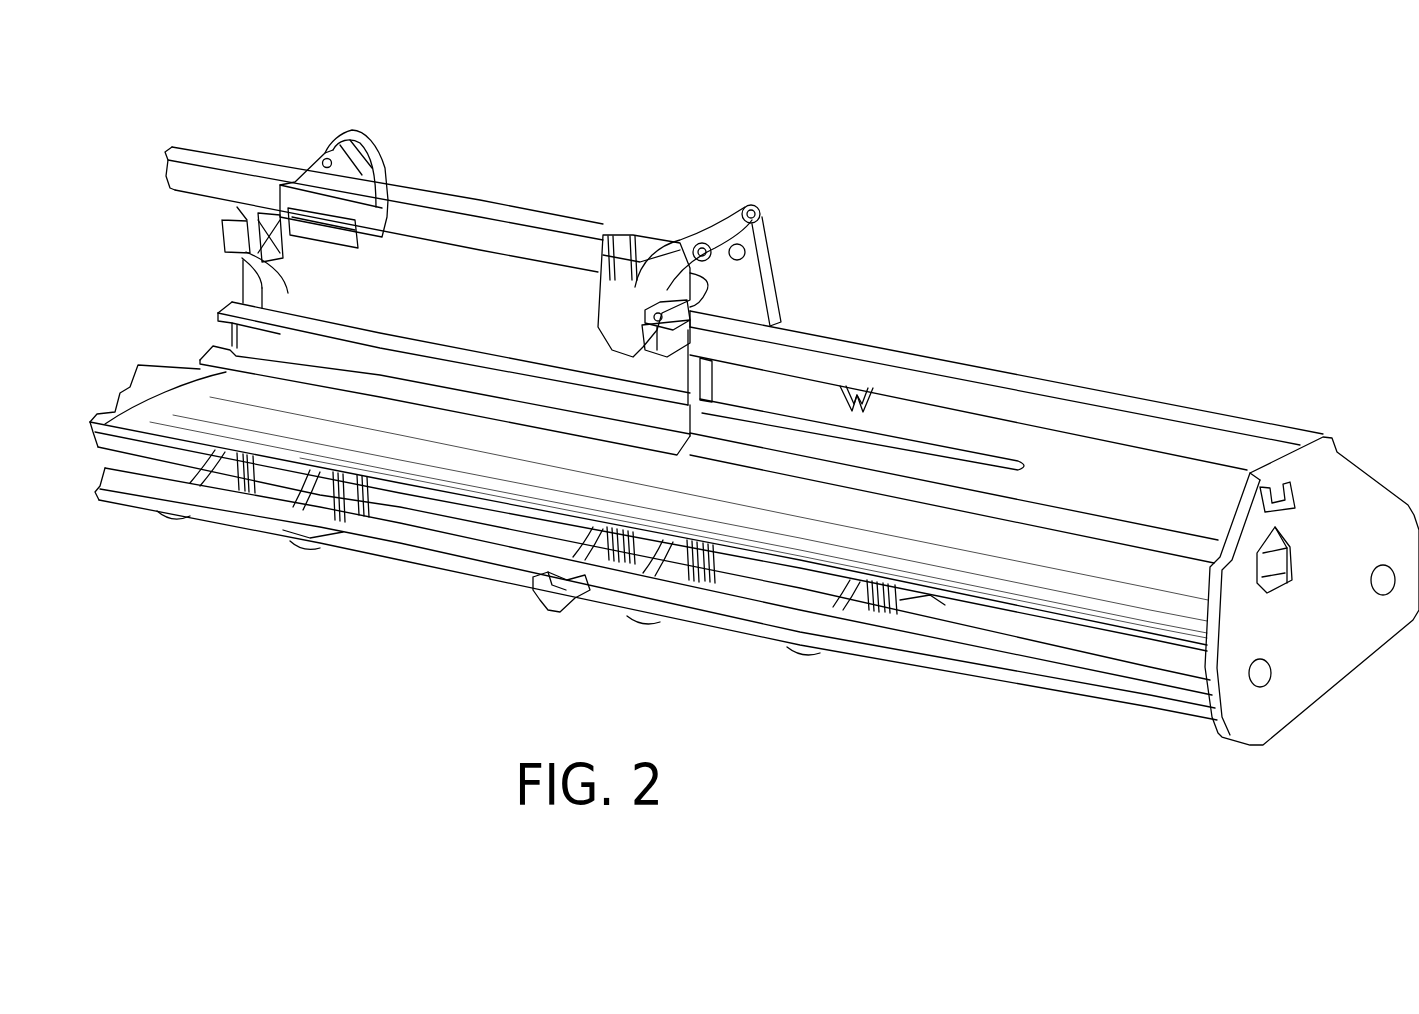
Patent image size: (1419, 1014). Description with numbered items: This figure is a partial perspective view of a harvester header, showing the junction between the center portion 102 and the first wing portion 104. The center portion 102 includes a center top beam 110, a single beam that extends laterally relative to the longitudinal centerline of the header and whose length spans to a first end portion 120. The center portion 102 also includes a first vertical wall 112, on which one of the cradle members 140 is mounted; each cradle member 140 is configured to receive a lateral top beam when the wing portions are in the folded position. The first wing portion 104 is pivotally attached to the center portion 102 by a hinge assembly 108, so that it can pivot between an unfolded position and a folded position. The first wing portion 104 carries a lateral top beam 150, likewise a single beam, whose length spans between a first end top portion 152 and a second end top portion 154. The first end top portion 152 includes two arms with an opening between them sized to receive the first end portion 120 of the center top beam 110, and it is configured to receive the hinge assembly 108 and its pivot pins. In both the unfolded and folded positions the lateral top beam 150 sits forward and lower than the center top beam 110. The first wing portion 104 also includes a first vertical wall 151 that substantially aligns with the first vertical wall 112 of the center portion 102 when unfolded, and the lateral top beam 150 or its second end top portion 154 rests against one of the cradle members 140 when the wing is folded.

The center portion 102 is at (425, 187).
The first wing portion 104 is at (1135, 390).
The hinge assembly 108 is at (772, 262).
The center top beam 110 is at (537, 212).
The first vertical wall 112 is at (488, 326).
The first end portion 120 is at (642, 238).
The cradle member 140 is at (226, 233).
The lateral top beam 150 is at (1005, 378).
The first vertical wall 151 is at (1207, 472).
The first end top portion 152 is at (688, 305).
The second end top portion 154 is at (1268, 430).